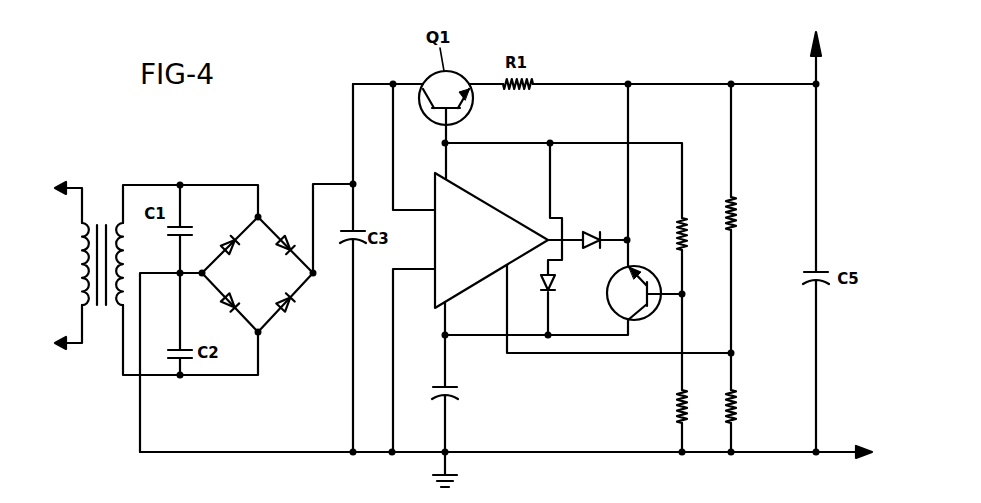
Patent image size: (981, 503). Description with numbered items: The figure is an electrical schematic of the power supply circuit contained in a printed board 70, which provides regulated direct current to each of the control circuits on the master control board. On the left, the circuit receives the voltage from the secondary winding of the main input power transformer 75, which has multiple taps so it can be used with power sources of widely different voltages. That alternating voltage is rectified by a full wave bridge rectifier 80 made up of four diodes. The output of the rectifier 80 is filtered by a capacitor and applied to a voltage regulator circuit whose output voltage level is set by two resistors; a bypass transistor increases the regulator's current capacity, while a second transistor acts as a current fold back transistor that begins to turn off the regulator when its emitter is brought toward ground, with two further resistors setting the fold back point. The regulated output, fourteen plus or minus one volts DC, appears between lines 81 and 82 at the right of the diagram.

The printed board 70 is at (645, 62).
The main input power transformer 75 is at (105, 217).
The full wave bridge rectifier 80 is at (272, 180).
The output line 81 is at (819, 70).
The output line 82 is at (838, 447).